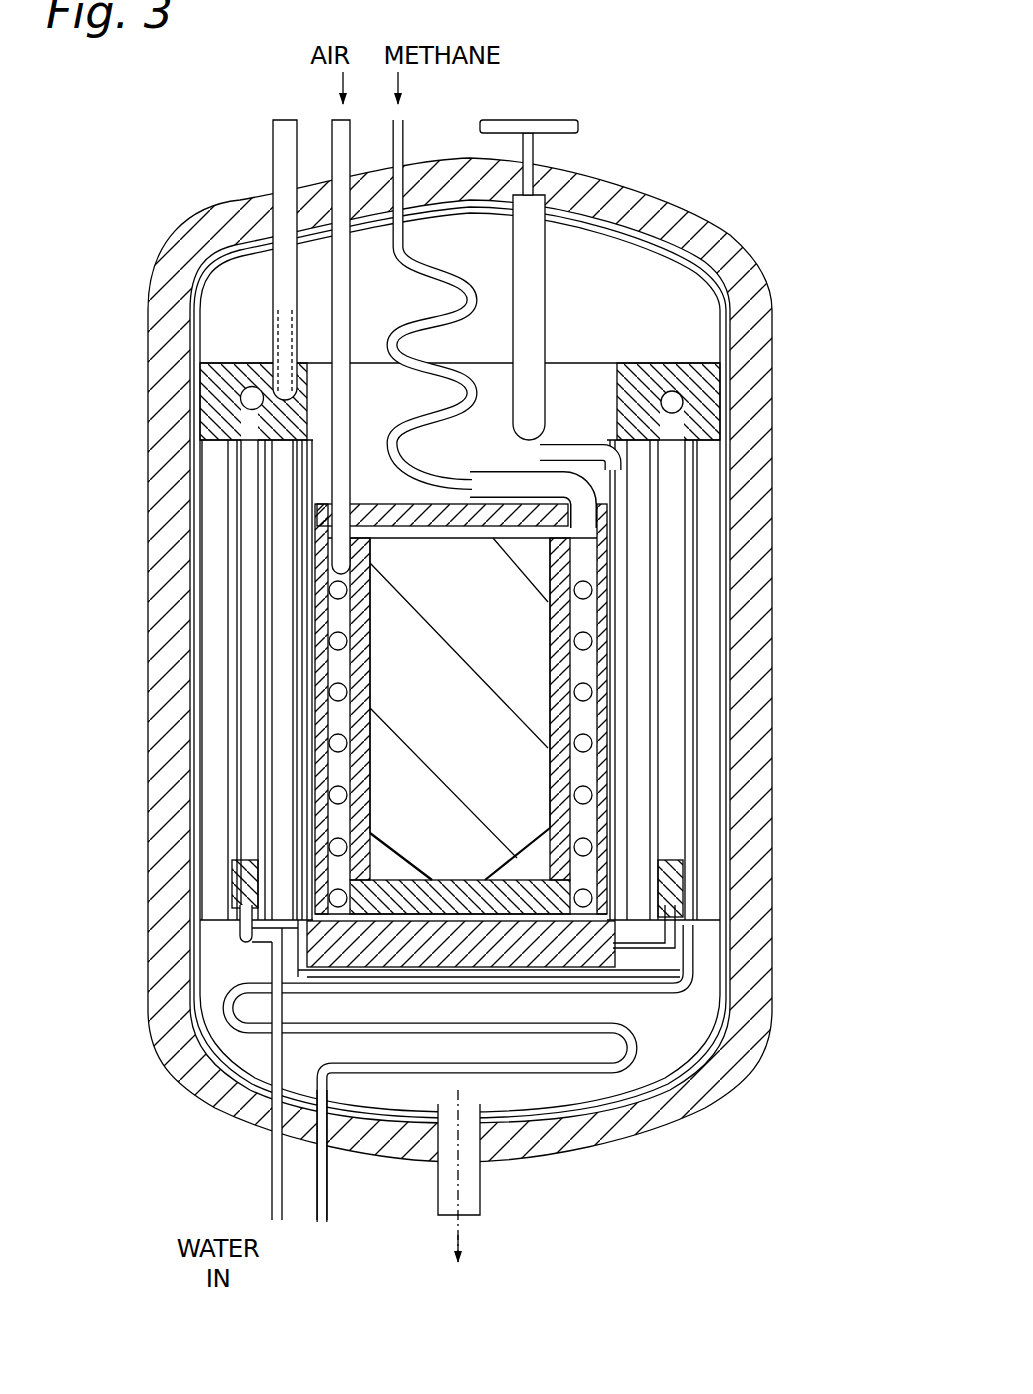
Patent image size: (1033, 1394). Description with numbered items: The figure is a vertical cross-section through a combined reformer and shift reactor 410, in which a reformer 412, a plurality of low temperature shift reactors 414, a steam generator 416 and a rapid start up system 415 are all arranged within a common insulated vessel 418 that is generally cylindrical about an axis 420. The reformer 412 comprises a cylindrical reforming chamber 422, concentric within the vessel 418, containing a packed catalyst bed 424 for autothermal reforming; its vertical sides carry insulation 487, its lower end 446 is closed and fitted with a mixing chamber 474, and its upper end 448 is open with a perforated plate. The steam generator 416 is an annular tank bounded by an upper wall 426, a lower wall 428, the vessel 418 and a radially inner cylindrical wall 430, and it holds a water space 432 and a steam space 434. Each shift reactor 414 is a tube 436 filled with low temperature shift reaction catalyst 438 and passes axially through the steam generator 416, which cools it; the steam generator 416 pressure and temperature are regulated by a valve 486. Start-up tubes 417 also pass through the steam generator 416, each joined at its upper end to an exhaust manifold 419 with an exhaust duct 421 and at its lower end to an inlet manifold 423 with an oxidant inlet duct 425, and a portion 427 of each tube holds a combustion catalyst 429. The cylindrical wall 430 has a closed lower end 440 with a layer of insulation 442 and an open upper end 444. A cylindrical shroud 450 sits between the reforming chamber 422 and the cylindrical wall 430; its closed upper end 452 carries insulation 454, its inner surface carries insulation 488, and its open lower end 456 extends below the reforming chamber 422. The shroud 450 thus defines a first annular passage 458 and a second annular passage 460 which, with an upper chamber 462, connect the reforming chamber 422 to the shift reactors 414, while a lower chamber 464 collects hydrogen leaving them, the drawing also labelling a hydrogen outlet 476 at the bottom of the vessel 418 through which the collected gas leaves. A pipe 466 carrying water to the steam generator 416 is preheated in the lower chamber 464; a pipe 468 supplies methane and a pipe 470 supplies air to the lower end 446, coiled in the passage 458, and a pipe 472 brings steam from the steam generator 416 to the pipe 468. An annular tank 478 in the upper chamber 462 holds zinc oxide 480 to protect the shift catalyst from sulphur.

The combined reformer and shift reactor 410 is at (684, 192).
The reformer 412 is at (582, 721).
The low temperature shift reactors 414 is at (728, 796).
The rapid start up system 415 is at (702, 940).
The steam generator 416 is at (734, 873).
The start-up tubes 417 is at (241, 516).
The vessel 418 is at (750, 1008).
The exhaust manifold 419 is at (676, 378).
The axis 420 is at (458, 1092).
The exhaust duct 421 is at (279, 124).
The reforming chamber 422 is at (604, 690).
The inlet manifold 423 is at (650, 947).
The packed catalyst bed 424 is at (504, 787).
The inlet duct 425 is at (272, 1153).
The upper wall 426 is at (196, 440).
The portion of start-up tube 427 is at (233, 892).
The lower wall 428 is at (262, 930).
The combustion catalyst 429 is at (222, 904).
The cylindrical wall 430 is at (238, 1000).
The water space 432 is at (212, 760).
The steam space 434 is at (310, 610).
The tube 436 is at (197, 708).
The low temperature shift reaction catalyst 438 is at (710, 645).
The lower end of cylindrical wall 440 is at (197, 990).
The layer of insulation 442 is at (287, 1013).
The upper end of cylindrical wall 444 is at (656, 393).
The lower end of reforming chamber 446 is at (408, 908).
The upper end of reforming chamber 448 is at (613, 500).
The cylindrical shroud 450 is at (311, 811).
The upper end of shroud 452 is at (355, 505).
The layer of insulation 454 is at (411, 512).
The lower end of shroud 456 is at (620, 985).
The first annular passage 458 is at (584, 873).
The second annular passage 460 is at (236, 862).
The upper chamber 462 is at (600, 273).
The lower chamber 464 is at (458, 1074).
The pipe 466 is at (326, 1222).
The pipe 468 is at (406, 122).
The pipe 470 is at (334, 112).
The pipe 472 is at (666, 412).
The mixing chamber 474 is at (437, 948).
The hydrogen outlet 476 is at (482, 1198).
The annular tank 478 is at (195, 368).
The zinc oxide 480 is at (216, 385).
The valve 486 is at (538, 228).
The insulation 487 is at (561, 566).
The insulation 488 is at (311, 606).